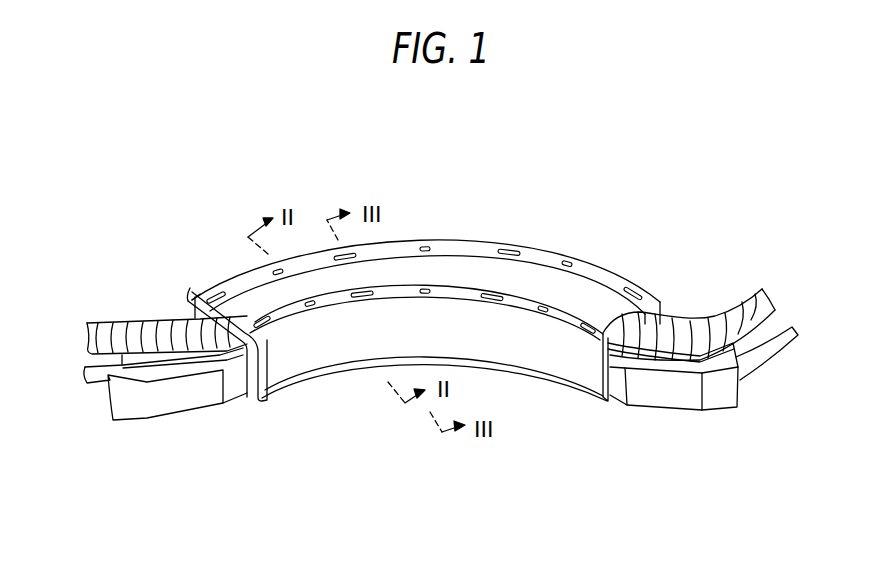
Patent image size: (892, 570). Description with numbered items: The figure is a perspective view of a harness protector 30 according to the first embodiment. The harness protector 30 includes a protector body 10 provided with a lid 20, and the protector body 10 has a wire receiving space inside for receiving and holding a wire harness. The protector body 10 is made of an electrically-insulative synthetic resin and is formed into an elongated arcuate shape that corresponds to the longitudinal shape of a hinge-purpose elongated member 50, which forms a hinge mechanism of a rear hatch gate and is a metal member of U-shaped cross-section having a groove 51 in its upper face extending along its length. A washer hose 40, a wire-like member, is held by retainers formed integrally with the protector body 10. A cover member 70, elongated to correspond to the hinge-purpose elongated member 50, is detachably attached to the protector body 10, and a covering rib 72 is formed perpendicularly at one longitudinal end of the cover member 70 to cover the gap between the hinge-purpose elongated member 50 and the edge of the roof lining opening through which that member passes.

The protector body 10 is at (426, 272).
The lid 20 is at (472, 270).
The harness protector 30 is at (422, 212).
The washer hose 40 is at (135, 380).
The hinge-purpose elongated member 50 is at (660, 402).
The groove 51 is at (697, 330).
The cover member 70 is at (528, 352).
The covering rib 72 is at (257, 398).